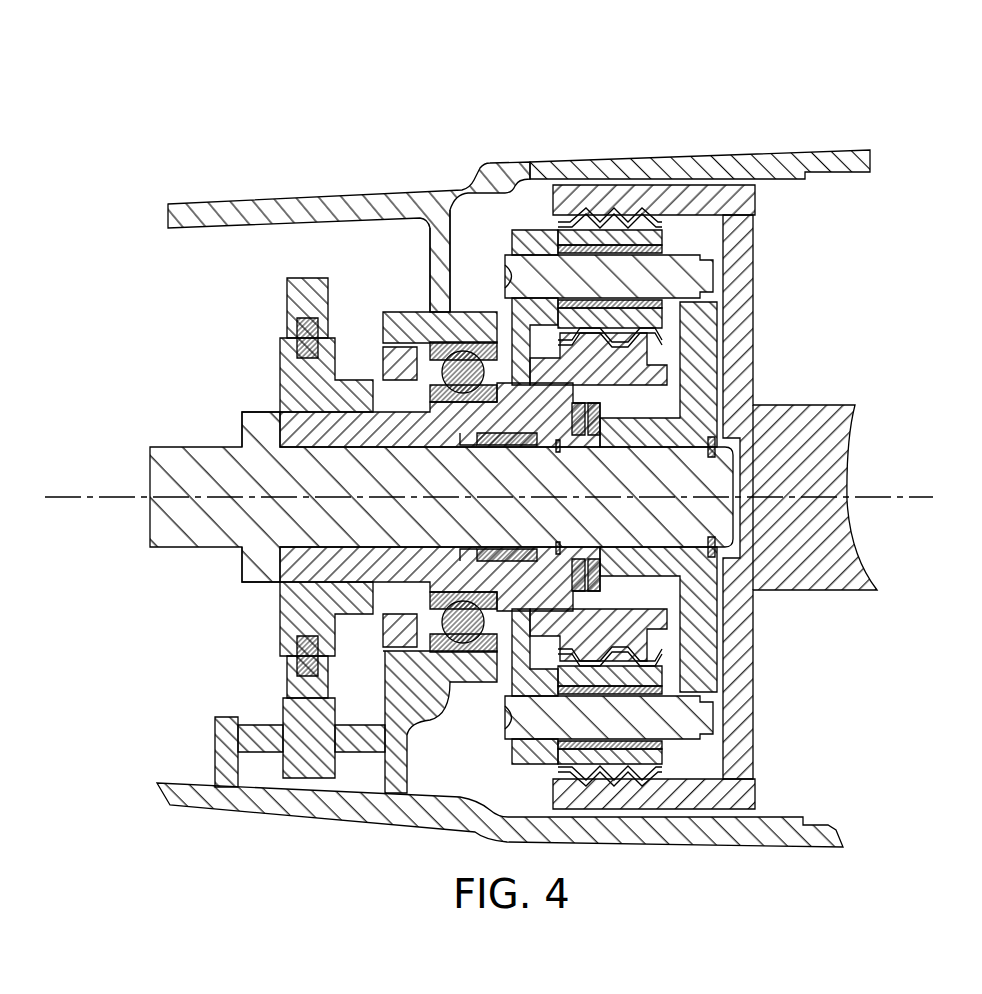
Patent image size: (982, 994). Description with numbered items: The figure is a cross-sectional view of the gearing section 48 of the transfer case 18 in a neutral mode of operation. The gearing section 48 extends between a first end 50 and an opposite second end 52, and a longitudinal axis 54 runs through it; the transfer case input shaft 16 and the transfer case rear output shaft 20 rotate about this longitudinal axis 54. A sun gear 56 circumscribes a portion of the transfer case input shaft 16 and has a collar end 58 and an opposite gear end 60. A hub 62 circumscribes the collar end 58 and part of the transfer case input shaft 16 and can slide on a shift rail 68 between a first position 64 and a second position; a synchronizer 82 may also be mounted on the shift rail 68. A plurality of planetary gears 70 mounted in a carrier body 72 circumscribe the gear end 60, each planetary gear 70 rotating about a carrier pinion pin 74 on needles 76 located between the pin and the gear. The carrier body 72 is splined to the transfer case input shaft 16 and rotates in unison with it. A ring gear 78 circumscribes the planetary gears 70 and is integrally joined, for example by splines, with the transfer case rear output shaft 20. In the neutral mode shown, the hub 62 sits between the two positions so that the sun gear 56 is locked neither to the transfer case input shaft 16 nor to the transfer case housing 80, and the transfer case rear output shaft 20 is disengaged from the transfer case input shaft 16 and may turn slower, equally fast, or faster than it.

The transfer case input shaft 16 is at (170, 470).
The transfer case 18 is at (882, 96).
The transfer case rear output shaft 20 is at (866, 563).
The gearing section 48 is at (170, 110).
The first end 50 is at (167, 216).
The second end 52 is at (872, 152).
The longitudinal axis 54 is at (889, 498).
The sun gear 56 is at (337, 795).
The collar end 58 is at (365, 430).
The gear end 60 is at (648, 357).
The hub 62 is at (293, 380).
The first position 64 is at (240, 412).
The shift rail 68 is at (262, 750).
The planetary gears 70 is at (665, 218).
The carrier body 72 is at (697, 330).
The carrier pinion pin 74 is at (690, 280).
The needles 76 is at (660, 250).
The ring gear 78 is at (618, 200).
The transfer case housing 80 is at (437, 300).
The synchronizer 82 is at (315, 770).